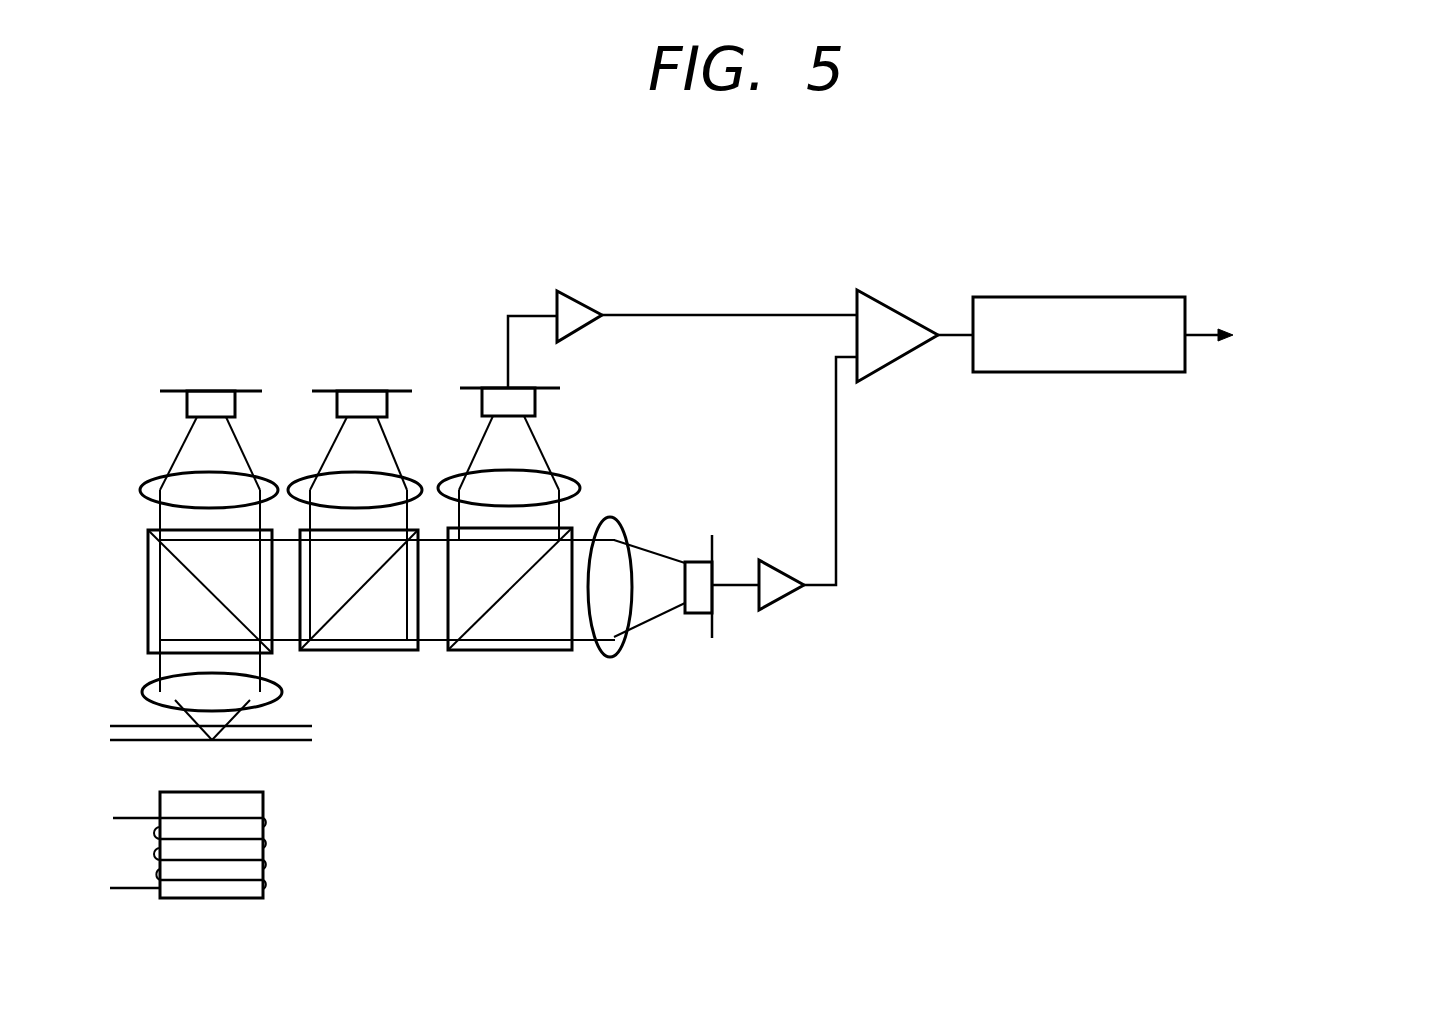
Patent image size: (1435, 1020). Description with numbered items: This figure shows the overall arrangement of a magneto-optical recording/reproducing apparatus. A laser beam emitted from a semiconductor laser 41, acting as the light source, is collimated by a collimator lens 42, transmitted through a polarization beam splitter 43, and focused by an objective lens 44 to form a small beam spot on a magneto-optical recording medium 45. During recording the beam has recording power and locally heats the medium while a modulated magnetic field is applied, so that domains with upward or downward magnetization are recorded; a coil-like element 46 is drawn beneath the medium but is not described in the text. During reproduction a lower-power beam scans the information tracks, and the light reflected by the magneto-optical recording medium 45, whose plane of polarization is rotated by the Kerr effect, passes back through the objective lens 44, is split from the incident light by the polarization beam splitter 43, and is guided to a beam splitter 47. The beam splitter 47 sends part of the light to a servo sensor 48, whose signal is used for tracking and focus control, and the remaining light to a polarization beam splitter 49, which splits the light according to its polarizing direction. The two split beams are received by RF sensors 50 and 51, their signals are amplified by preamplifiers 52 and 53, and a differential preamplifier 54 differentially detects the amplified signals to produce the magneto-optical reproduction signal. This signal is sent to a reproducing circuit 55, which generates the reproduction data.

The semiconductor laser 41 is at (182, 391).
The collimator lens 42 is at (155, 483).
The polarization beam splitter 43 is at (148, 560).
The objective lens 44 is at (145, 692).
The magneto-optical recording medium 45 is at (297, 724).
The magnetic coil 46 is at (263, 795).
The beam splitter 47 is at (408, 652).
The servo sensor 48 is at (332, 391).
The polarization beam splitter 49 is at (558, 652).
The RF sensor 50 is at (712, 548).
The RF sensor 51 is at (472, 388).
The preamplifier 52 is at (783, 568).
The preamplifier 53 is at (580, 298).
The differential preamplifier 54 is at (897, 305).
The reproducing circuit 55 is at (1143, 297).